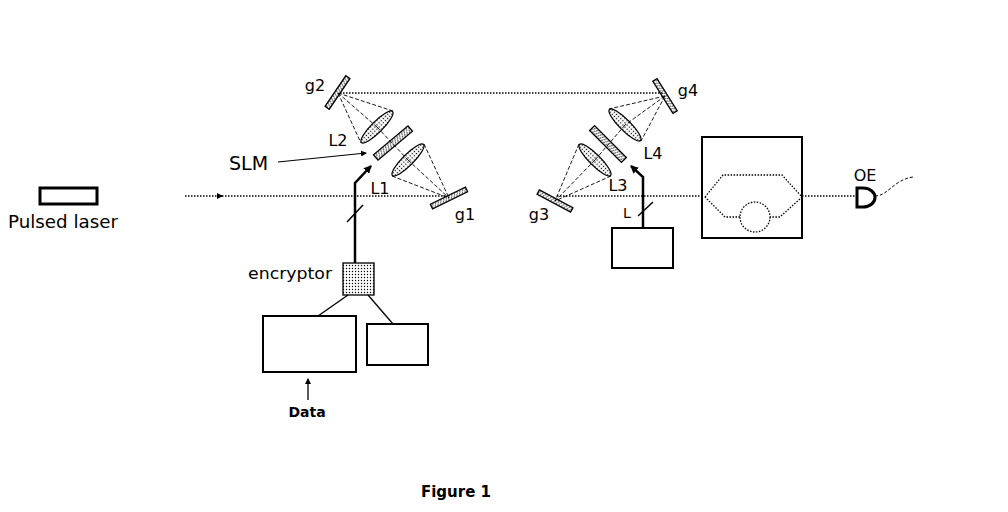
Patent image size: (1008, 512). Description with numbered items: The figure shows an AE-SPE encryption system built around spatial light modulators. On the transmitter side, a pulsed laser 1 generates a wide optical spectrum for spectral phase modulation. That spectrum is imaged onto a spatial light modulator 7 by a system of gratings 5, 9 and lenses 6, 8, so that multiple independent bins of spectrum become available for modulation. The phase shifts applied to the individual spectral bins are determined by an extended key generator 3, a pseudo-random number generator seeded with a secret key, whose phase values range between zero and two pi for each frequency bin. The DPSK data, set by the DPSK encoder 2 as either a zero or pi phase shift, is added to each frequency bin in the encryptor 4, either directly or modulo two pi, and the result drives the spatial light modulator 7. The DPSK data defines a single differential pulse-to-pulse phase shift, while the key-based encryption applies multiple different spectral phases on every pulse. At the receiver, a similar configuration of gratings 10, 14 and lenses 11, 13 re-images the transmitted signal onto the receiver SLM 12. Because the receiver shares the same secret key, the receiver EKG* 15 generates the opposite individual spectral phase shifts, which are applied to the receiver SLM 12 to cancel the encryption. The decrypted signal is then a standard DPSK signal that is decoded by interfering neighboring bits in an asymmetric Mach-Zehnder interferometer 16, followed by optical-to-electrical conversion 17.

The pulsed laser 1 is at (68, 185).
The DPSK encoder 2 is at (300, 342).
The extended key generator (EKG) 3 is at (405, 339).
The encryptor 4 is at (355, 291).
The grating 5 is at (456, 193).
The lens 6 is at (416, 158).
The spatial light modulator 7 is at (399, 139).
The lens 8 is at (382, 121).
The grating 9 is at (337, 83).
The grating 10 is at (662, 85).
The lens 11 is at (615, 123).
The receiver SLM 12 is at (594, 140).
The lens 13 is at (581, 158).
The grating 14 is at (545, 190).
The receiver EKG* 15 is at (628, 248).
The asymmetric Mach-Zehnder interferometer (AMZI) 16 is at (752, 178).
The optical-to-electrical (OE) conversion 17 is at (883, 206).